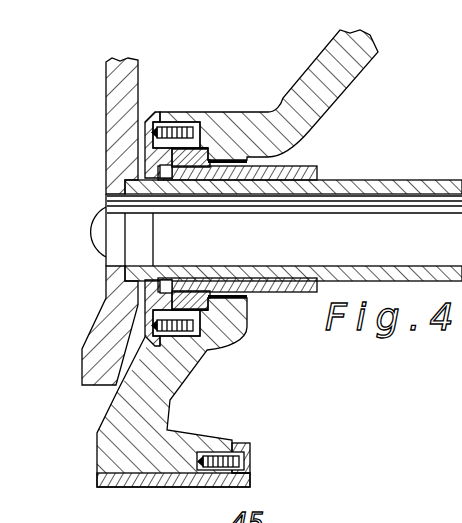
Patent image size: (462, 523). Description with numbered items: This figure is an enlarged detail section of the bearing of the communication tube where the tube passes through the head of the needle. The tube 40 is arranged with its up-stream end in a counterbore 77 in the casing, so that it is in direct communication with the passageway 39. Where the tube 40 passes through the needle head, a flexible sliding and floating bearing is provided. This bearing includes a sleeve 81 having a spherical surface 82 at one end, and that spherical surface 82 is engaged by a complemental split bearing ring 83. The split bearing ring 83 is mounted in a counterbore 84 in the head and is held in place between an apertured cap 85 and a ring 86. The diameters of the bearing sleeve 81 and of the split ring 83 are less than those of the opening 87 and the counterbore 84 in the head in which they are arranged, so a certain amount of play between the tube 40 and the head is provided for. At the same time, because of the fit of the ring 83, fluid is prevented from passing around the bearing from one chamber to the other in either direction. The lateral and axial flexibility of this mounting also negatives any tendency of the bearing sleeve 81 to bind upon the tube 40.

The passageway 39 is at (100, 192).
The tube 40 is at (392, 185).
The counterbore 77 is at (122, 274).
The sleeve 81 is at (276, 290).
The spherical surface 82 is at (198, 165).
The split bearing ring 83 is at (150, 158).
The counterbore 84 is at (205, 350).
The apertured cap 85 is at (147, 302).
The ring 86 is at (207, 160).
The opening 87 is at (240, 330).